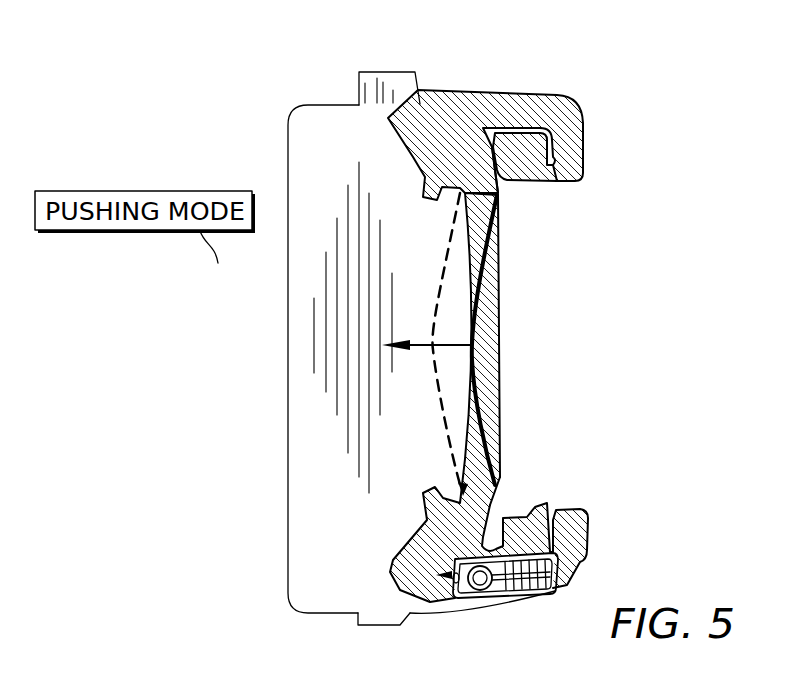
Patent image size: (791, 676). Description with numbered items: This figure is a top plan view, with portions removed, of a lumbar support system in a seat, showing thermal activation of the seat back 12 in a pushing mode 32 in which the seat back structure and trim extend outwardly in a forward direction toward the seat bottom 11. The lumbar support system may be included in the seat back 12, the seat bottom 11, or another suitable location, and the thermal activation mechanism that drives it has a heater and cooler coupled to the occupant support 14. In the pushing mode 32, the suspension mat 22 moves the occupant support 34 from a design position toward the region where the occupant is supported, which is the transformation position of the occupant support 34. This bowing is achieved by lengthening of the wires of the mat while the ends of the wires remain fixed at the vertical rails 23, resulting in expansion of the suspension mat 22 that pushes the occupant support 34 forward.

The seat bottom 11 is at (325, 105).
The seat back 12 is at (544, 72).
The occupant support 14 is at (538, 369).
The suspension mat 22 is at (477, 331).
The vertical rails 23 is at (498, 194).
The pushing mode 32 is at (423, 345).
The occupant support 34 is at (447, 443).